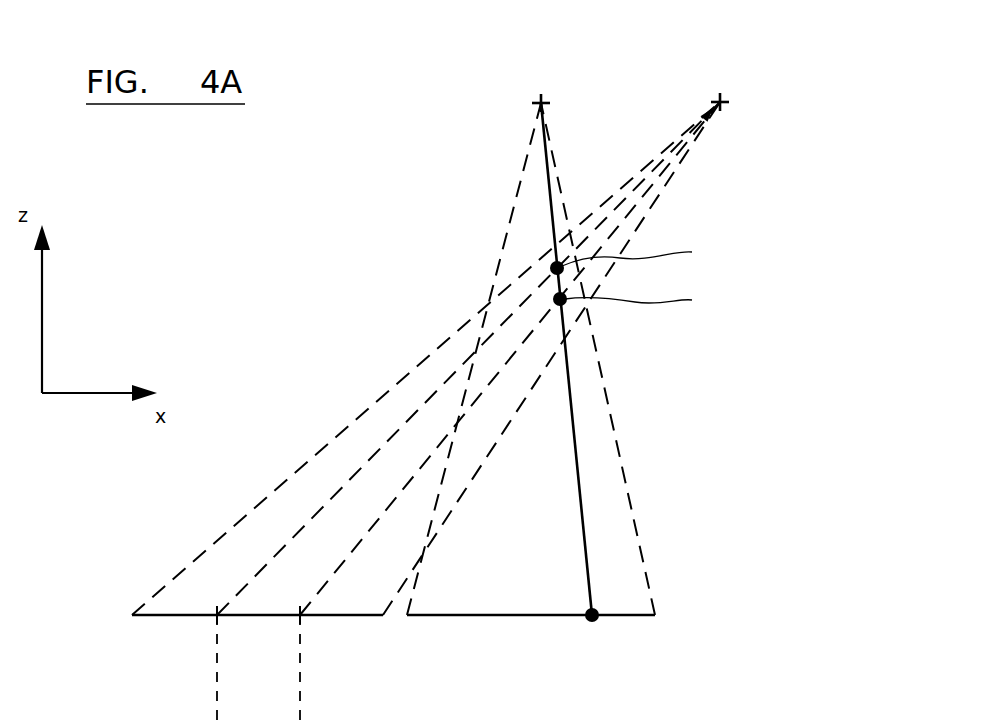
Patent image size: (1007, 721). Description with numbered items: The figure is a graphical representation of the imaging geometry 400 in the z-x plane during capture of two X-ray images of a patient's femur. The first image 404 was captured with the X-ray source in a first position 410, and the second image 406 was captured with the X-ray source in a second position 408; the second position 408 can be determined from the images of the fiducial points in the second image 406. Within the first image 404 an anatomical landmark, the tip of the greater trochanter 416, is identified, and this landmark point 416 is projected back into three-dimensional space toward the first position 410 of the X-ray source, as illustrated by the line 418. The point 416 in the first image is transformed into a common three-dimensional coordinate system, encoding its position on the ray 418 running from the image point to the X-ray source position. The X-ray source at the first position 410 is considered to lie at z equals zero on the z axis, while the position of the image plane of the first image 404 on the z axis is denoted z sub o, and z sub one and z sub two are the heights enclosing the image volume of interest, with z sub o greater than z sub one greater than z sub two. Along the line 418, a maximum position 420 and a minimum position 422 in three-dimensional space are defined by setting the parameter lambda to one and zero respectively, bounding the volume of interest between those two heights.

The imaging geometry 400 is at (742, 158).
The first image 404 is at (628, 617).
The second image 406 is at (175, 618).
The second position 408 is at (722, 98).
The first position 410 is at (541, 98).
The tip of the greater trochanter 416 is at (592, 620).
The line 418 is at (575, 440).
The maximum position 420 is at (555, 266).
The minimum position 422 is at (556, 298).